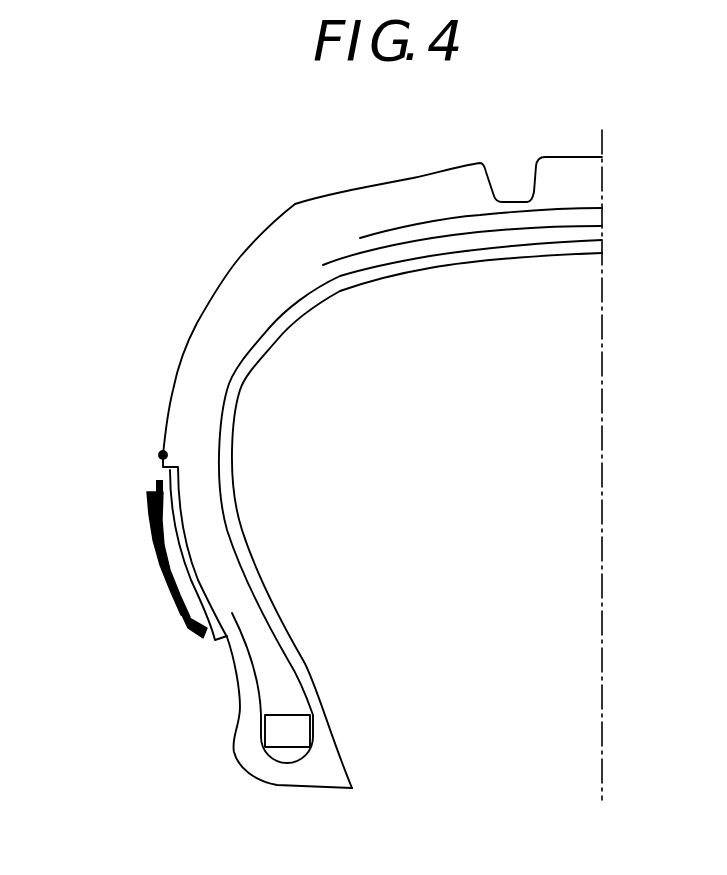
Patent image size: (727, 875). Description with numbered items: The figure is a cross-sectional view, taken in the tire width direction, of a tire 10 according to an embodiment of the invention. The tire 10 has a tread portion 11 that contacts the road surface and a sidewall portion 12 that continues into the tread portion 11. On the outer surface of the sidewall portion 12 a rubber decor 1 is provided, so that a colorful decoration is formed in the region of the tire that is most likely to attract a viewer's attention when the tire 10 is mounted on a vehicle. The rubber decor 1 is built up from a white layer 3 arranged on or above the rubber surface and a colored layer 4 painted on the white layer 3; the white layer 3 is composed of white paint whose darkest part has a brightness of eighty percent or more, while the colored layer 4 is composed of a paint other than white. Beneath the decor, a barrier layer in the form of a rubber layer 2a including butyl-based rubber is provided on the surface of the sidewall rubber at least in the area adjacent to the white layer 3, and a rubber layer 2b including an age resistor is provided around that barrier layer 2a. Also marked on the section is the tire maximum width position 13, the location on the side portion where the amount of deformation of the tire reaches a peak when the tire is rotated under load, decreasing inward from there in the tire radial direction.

The rubber decor 1 is at (132, 550).
The rubber layer 2a is at (171, 470).
The rubber layer 2b is at (206, 342).
The white layer 3 is at (151, 521).
The colored layer 4 is at (183, 620).
The tire 10 is at (265, 202).
The tread portion 11 is at (432, 195).
The sidewall portion 12 is at (77, 300).
The tire maximum width position 13 is at (161, 452).